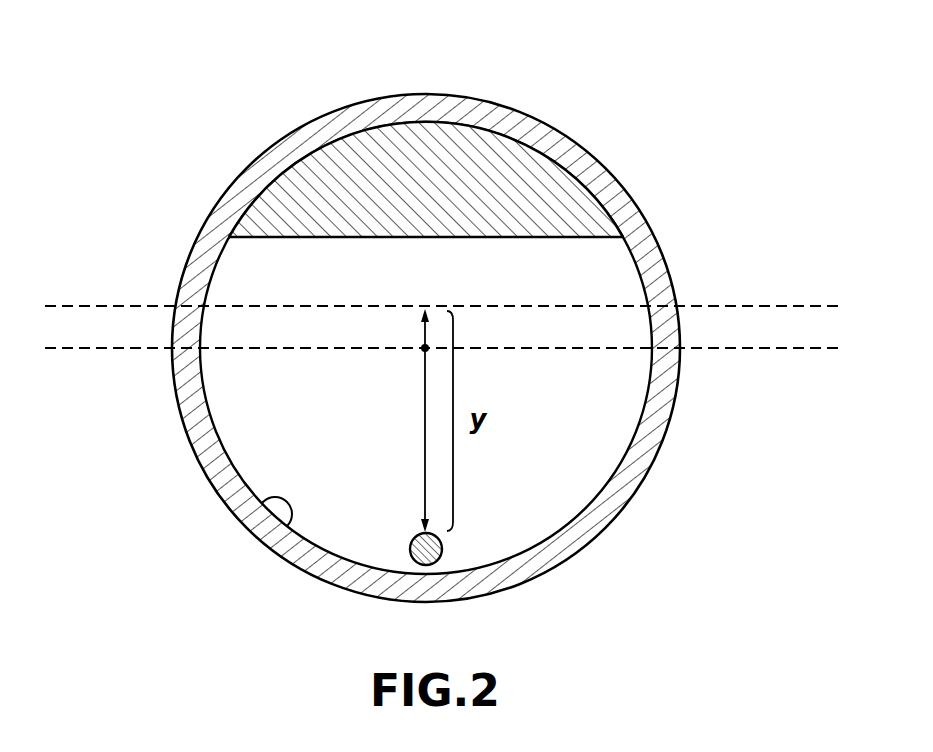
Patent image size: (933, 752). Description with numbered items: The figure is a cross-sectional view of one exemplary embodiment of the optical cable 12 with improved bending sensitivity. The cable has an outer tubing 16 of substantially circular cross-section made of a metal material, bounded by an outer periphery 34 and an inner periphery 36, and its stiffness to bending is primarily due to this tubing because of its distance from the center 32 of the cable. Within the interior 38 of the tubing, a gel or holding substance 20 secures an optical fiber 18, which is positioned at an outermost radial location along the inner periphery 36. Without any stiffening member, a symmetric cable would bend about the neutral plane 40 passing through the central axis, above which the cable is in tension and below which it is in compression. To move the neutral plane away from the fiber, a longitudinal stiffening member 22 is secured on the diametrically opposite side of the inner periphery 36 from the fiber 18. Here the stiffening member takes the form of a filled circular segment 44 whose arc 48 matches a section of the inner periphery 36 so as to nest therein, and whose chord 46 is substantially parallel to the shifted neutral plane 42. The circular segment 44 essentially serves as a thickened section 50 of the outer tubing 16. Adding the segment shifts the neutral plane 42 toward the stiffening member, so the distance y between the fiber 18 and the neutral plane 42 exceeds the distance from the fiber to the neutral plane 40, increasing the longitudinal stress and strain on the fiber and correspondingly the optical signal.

The optical cable 12 is at (154, 164).
The outer tubing 16 is at (223, 480).
The optical fiber 18 is at (450, 552).
The holding substance 20 is at (573, 458).
The stiffening member 22 is at (383, 155).
The center 32 is at (422, 350).
The outer periphery 34 is at (179, 412).
The inner periphery 36 is at (247, 523).
The interior 38 is at (389, 478).
The neutral plane 40 is at (843, 348).
The neutral plane 42 is at (843, 306).
The circular segment 44 is at (470, 201).
The chord 46 is at (295, 238).
The arc 48 is at (496, 130).
The thickened section 50 is at (520, 173).